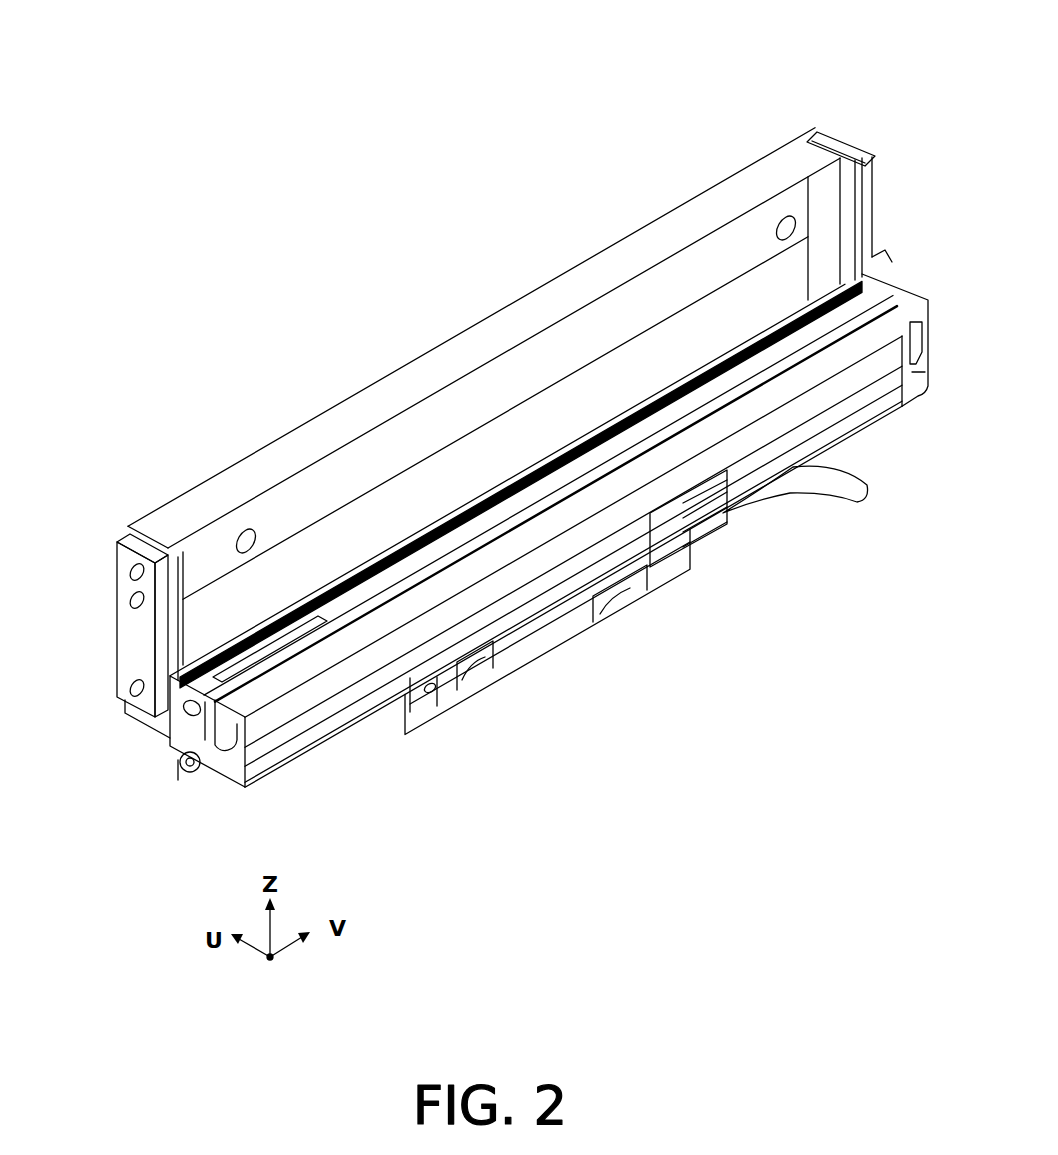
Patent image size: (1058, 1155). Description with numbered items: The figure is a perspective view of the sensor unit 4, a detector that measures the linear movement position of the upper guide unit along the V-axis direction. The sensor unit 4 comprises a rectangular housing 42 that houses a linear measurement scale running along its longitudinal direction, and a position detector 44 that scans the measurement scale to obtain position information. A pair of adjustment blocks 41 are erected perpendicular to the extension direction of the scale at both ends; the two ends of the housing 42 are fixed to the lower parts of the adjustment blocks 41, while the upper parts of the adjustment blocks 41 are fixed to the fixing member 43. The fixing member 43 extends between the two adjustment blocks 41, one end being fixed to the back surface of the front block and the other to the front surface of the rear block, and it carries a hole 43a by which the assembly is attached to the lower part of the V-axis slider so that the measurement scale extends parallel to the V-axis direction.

The sensor unit 4 is at (461, 250).
The adjustment block 41 is at (102, 518).
The housing 42 is at (310, 733).
The fixing member 43 is at (322, 426).
The hole 43a is at (240, 532).
The position detector 44 is at (518, 653).